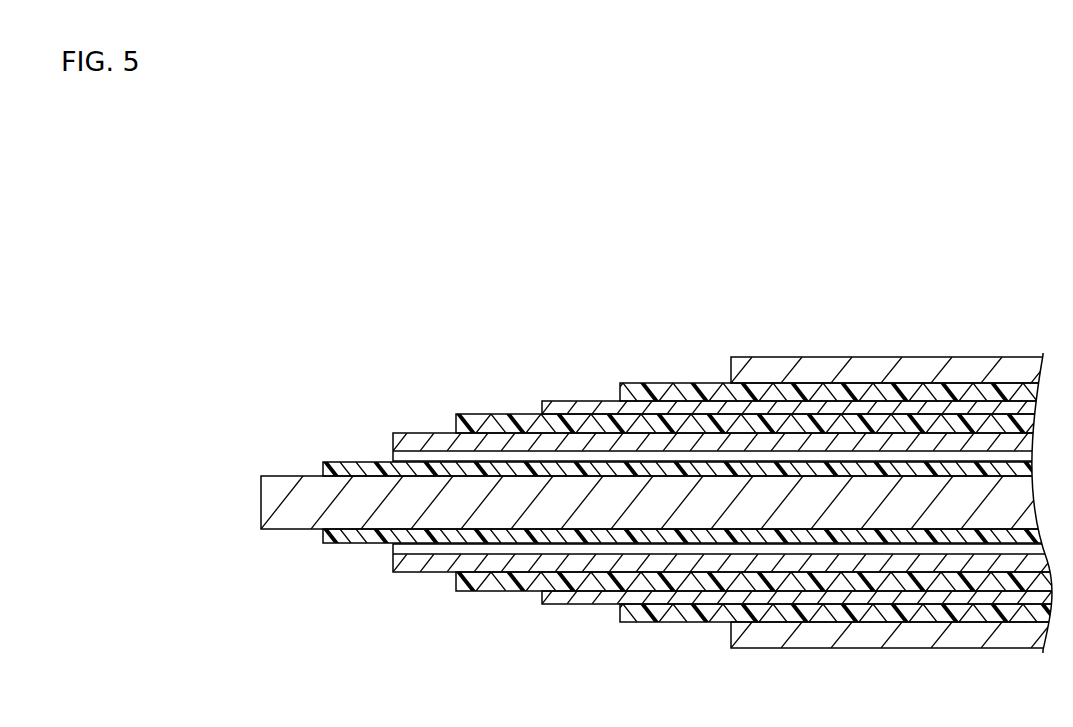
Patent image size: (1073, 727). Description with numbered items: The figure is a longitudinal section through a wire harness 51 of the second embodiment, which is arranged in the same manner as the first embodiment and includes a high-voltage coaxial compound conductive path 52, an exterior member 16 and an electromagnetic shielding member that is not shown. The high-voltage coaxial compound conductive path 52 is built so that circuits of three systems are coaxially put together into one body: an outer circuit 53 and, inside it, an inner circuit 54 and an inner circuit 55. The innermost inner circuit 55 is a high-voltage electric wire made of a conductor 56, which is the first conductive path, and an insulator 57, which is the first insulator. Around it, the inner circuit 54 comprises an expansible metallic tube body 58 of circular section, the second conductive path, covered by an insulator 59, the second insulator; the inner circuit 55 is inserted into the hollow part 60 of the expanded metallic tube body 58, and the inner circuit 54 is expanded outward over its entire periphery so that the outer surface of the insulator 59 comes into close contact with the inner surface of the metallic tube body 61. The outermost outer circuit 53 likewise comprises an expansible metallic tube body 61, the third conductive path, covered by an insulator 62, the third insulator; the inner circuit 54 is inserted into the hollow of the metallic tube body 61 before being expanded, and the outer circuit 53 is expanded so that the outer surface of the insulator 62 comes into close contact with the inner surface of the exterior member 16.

The exterior member 16 is at (923, 360).
The wire harness 51 is at (655, 419).
The high-voltage coaxial compound conductive path 52 is at (423, 609).
The outer circuit 53 is at (575, 292).
The inner circuit 54 is at (492, 307).
The inner circuit 55 is at (238, 348).
The conductor 56 is at (278, 477).
The insulator 57 is at (325, 468).
The metallic tube body 58 is at (410, 442).
The insulator 59 is at (485, 423).
The hollow part 60 is at (393, 549).
The metallic tube body 61 is at (582, 410).
The insulator 62 is at (670, 390).